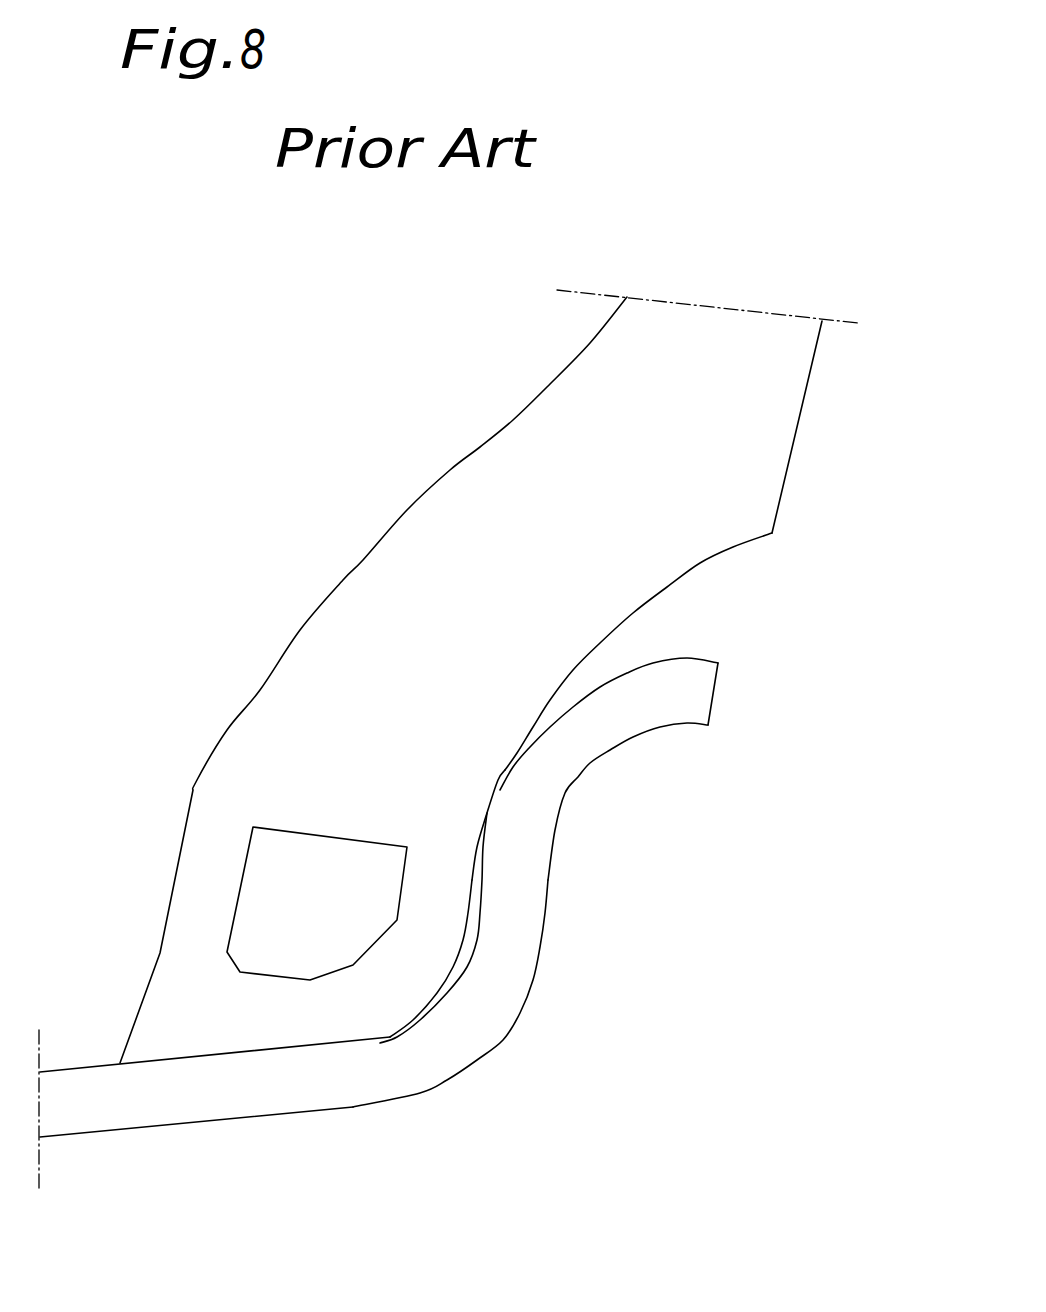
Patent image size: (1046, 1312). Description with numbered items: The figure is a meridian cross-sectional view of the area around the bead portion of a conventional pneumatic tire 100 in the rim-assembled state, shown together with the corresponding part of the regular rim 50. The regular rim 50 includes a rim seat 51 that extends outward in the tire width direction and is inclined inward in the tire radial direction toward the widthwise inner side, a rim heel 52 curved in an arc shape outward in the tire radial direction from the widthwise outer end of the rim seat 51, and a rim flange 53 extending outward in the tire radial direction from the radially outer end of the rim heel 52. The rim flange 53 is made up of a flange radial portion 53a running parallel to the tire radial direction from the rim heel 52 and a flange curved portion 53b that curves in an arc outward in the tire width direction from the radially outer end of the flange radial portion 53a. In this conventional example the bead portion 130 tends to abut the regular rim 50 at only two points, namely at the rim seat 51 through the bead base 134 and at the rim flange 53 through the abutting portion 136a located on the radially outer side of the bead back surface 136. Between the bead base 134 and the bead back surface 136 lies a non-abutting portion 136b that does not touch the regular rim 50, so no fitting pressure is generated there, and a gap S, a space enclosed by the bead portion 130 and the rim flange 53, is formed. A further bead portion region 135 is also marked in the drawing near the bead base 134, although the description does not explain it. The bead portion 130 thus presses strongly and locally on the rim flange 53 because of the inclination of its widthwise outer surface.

The pneumatic tire 100 is at (273, 500).
The bead portion 130 is at (162, 710).
The bead back surface 136 is at (567, 650).
The abutting portion 136a is at (488, 787).
The non-abutting portion 136b is at (462, 932).
The rim flange 53 is at (653, 842).
The flange radial portion 53a is at (528, 886).
The flange curved portion 53b is at (567, 767).
The gap S is at (473, 945).
The rim heel 52 is at (500, 995).
The regular rim 50 is at (517, 1053).
The rim seat 51 is at (228, 1107).
The bead base 134 is at (257, 1025).
The panel bent portion 135 is at (415, 1002).